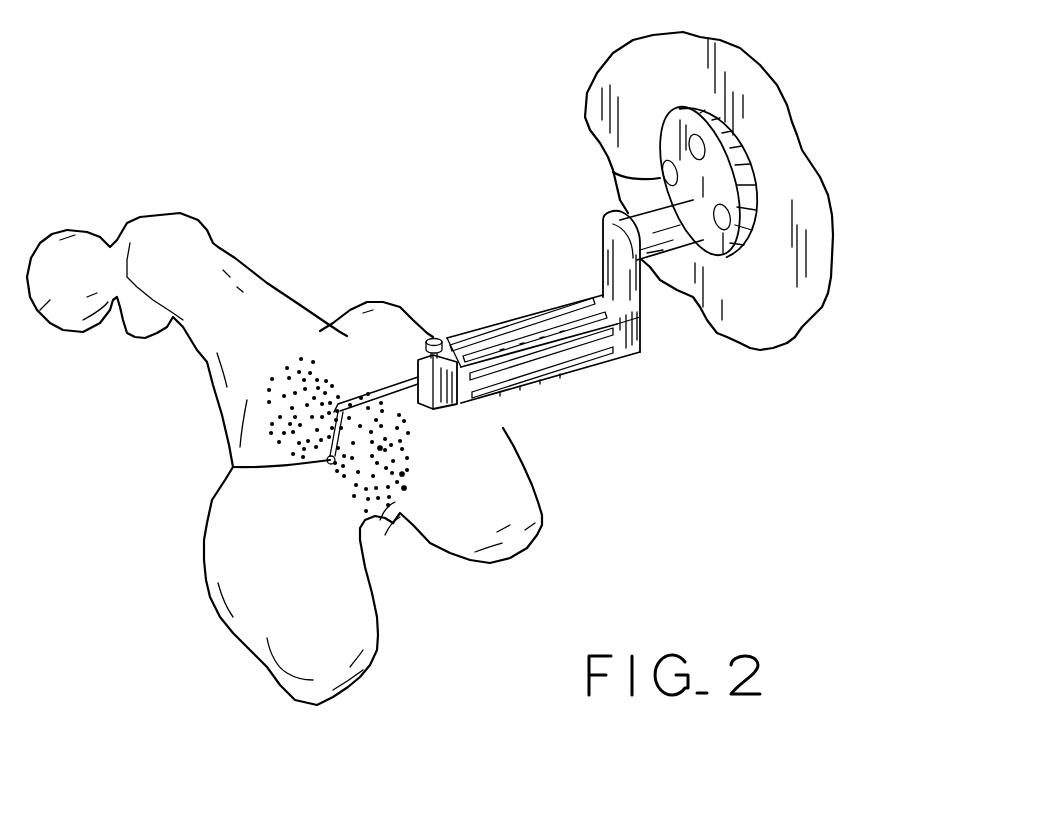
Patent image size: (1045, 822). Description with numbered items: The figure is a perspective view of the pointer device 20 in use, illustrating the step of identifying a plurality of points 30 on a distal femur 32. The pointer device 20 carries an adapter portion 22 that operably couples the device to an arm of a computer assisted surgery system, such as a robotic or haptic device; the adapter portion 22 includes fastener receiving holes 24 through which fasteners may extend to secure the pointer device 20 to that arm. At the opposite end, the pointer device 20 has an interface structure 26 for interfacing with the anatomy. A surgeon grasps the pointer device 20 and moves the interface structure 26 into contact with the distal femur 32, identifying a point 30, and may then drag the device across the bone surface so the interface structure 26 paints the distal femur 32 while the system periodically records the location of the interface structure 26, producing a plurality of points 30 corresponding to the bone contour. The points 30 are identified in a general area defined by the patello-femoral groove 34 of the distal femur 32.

The pointer device 20 is at (511, 312).
The adapter portion 22 is at (720, 172).
The fastener receiving holes 24 is at (693, 133).
The interface structure 26 is at (230, 471).
The points 30 is at (382, 448).
The distal femur 32 is at (513, 475).
The patello-femoral groove 34 is at (295, 367).